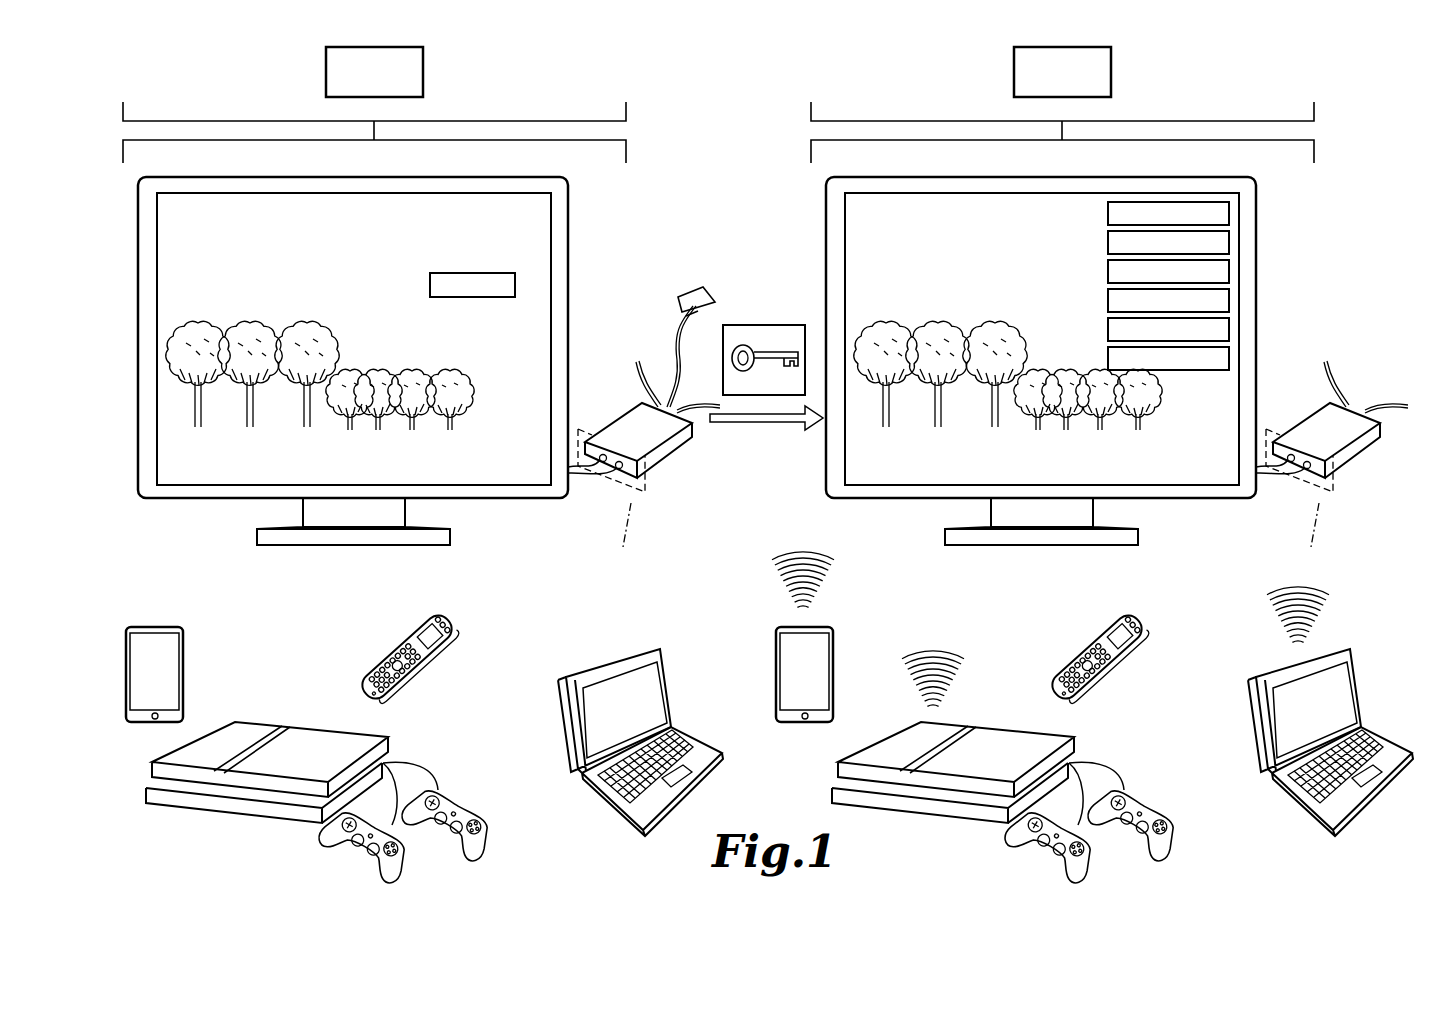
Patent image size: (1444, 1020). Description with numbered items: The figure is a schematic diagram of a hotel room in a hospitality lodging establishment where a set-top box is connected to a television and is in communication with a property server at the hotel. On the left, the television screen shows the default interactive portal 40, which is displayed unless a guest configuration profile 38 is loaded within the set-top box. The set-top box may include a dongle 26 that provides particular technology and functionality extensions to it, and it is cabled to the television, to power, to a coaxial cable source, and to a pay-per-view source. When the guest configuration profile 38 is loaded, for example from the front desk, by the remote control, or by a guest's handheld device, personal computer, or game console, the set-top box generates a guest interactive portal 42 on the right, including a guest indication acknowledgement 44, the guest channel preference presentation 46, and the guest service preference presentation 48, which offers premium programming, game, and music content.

The dongle 26 is at (696, 301).
The guest configuration profile 38 is at (757, 333).
The default interactive portal 40 is at (533, 215).
The guest interactive portal 42 is at (861, 223).
The guest indication acknowledgement 44 is at (893, 258).
The guest channel preference presentation 46 is at (1229, 216).
The guest service preference presentation 48 is at (1229, 298).